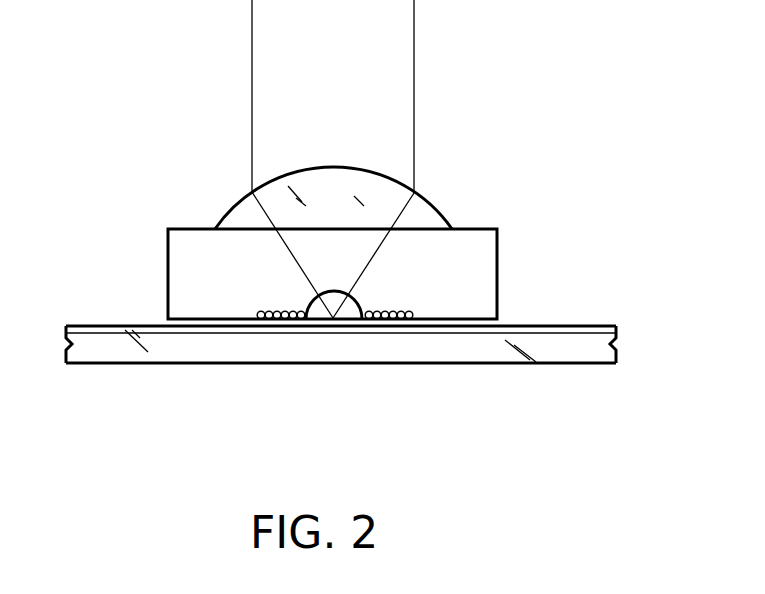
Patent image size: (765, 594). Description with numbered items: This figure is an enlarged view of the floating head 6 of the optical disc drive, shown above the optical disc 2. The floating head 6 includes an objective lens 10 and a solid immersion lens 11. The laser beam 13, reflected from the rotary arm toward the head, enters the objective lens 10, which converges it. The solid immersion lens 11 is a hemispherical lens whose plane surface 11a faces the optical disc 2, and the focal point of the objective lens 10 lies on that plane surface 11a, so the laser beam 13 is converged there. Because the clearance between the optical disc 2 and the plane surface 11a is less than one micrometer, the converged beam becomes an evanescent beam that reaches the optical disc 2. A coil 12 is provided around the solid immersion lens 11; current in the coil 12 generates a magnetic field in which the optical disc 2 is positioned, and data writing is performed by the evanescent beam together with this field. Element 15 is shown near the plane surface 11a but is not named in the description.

The optical disc 2 is at (604, 325).
The floating head 6 is at (173, 204).
The objective lens 10 is at (292, 170).
The solid immersion lens 11 is at (333, 292).
The plane surface 11a is at (318, 320).
The coil 12 is at (268, 319).
The laser beam 13 is at (415, 40).
The light emitting point 15 is at (337, 321).